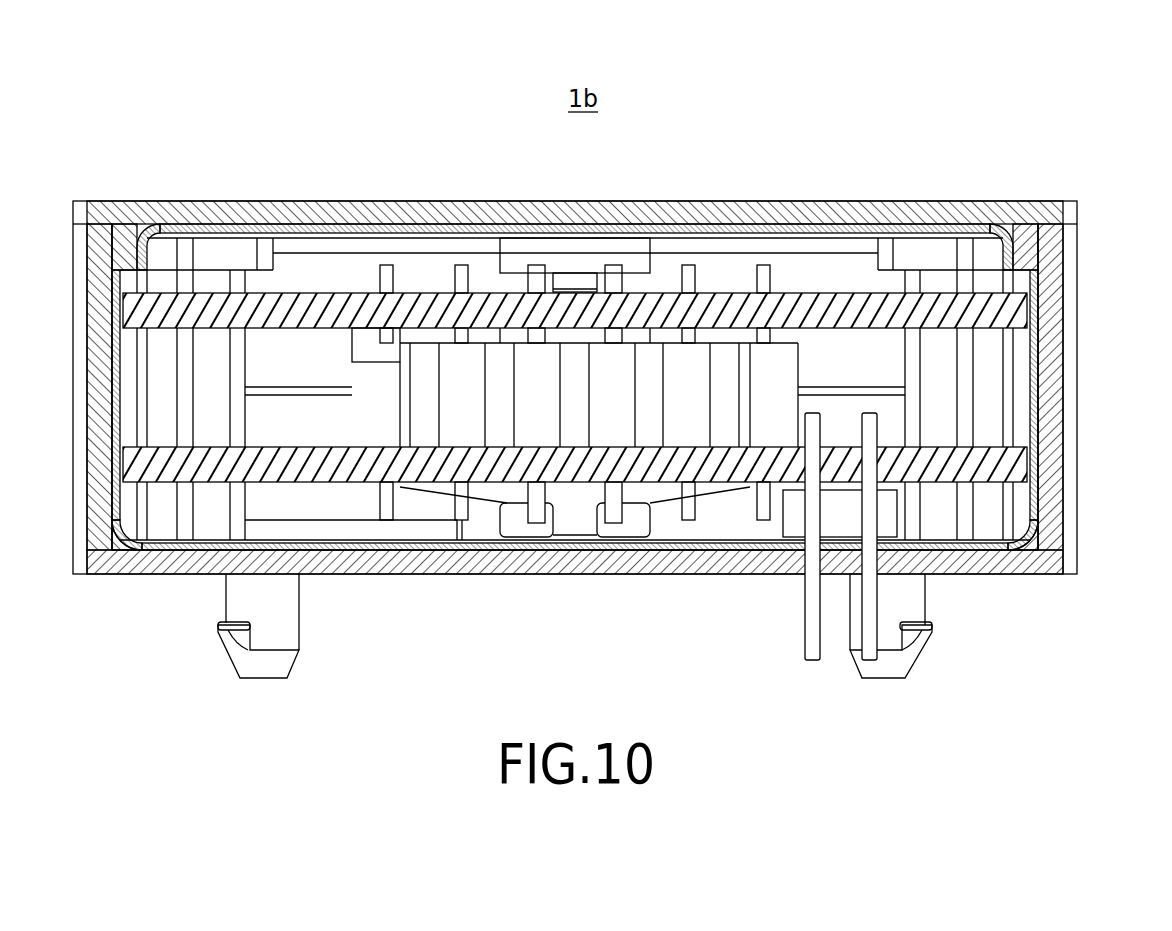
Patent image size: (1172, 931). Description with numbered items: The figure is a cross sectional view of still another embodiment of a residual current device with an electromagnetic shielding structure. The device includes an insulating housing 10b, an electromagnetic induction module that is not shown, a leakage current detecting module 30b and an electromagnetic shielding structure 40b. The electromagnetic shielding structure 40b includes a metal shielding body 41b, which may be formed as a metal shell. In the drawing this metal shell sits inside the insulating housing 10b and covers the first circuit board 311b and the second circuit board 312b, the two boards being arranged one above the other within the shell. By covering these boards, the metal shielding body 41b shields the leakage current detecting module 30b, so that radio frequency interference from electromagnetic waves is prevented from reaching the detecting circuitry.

The insulating housing 10b is at (183, 196).
The leakage current detecting module 30b is at (643, 397).
The first circuit board 311b is at (1000, 465).
The second circuit board 312b is at (1000, 311).
The electromagnetic shielding structure 40b is at (914, 220).
The metal shielding body 41b is at (845, 222).